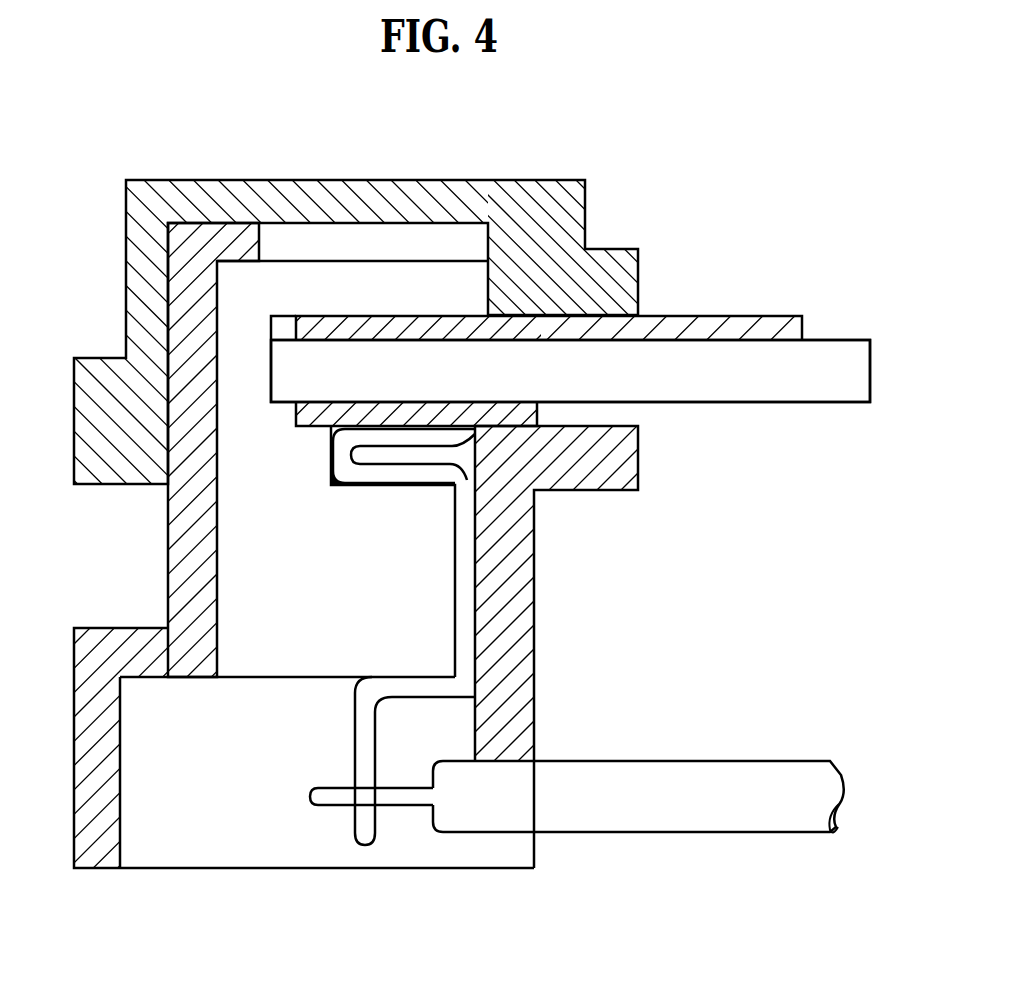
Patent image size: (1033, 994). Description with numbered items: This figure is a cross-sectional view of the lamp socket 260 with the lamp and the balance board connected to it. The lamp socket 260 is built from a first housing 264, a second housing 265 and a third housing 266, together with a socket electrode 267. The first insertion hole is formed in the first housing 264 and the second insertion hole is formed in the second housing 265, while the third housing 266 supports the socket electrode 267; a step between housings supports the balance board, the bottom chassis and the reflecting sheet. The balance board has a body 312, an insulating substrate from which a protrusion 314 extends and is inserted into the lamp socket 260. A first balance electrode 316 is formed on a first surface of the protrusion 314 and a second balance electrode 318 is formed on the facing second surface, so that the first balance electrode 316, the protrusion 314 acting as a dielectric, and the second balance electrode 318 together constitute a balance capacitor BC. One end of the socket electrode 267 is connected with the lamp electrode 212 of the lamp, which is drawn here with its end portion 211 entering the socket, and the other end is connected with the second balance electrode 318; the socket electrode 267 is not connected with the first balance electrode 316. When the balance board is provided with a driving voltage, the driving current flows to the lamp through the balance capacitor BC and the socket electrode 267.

The lamp socket 260 is at (660, 170).
The first housing 264 is at (90, 410).
The second housing 265 is at (90, 782).
The third housing 266 is at (240, 546).
The socket electrode 267 is at (352, 822).
The cable 211 is at (700, 812).
The lamp electrode 212 is at (408, 795).
The body 312 is at (855, 381).
The protrusion 314 is at (400, 368).
The first balance electrode 316 is at (327, 328).
The second balance electrode 318 is at (465, 415).
The balance capacitor BC is at (478, 113).